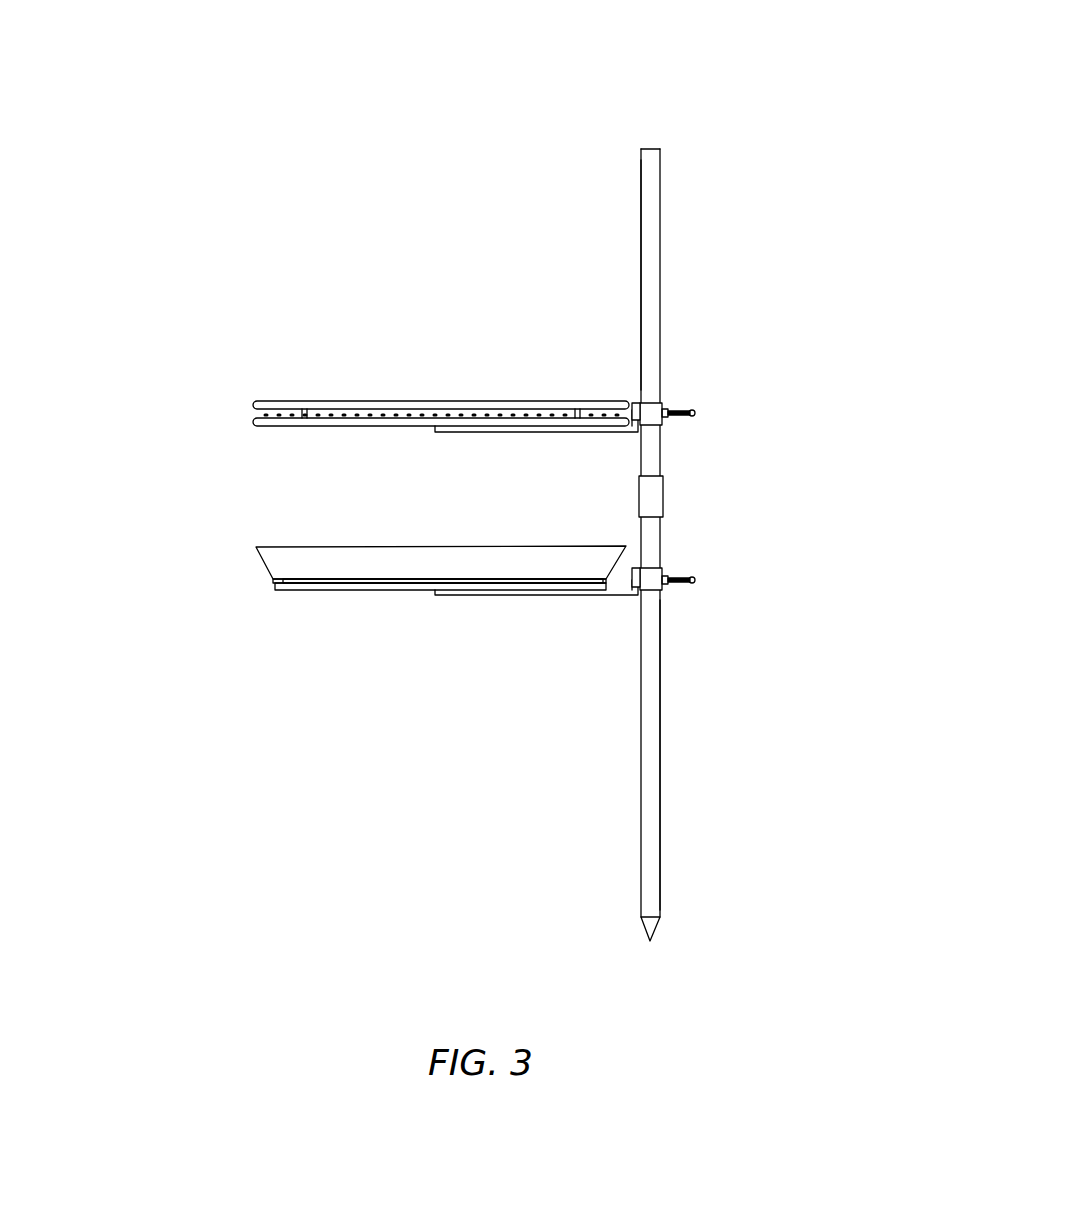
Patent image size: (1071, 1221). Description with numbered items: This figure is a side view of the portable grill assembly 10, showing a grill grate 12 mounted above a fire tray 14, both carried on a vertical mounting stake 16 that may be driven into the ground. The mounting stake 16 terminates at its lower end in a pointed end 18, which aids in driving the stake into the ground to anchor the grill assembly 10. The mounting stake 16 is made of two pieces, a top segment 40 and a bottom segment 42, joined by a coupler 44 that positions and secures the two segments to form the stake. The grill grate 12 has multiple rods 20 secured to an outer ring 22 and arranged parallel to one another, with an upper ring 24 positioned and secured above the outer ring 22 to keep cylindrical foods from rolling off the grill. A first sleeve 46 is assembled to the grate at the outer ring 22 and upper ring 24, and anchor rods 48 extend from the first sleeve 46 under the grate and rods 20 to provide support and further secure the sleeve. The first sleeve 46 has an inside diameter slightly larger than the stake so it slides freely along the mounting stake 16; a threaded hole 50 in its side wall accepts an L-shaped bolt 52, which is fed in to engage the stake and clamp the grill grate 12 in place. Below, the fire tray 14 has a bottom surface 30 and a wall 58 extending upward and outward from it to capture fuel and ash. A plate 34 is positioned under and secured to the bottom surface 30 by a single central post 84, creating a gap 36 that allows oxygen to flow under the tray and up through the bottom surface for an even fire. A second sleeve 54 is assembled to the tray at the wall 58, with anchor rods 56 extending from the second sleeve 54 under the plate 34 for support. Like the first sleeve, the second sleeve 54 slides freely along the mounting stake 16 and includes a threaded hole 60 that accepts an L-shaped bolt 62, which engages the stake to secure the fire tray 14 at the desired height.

The portable grill assembly 10 is at (722, 137).
The grill grate 12 is at (361, 335).
The fire tray 14 is at (367, 647).
The mounting stake 16 is at (648, 302).
The pointed end 18 is at (648, 917).
The rods 20 is at (448, 418).
The outer ring 22 is at (295, 422).
The upper ring 24 is at (392, 402).
The bottom surface 30 is at (375, 578).
The plate 34 is at (400, 583).
The gap 36 is at (252, 572).
The top segment 40 is at (648, 232).
The bottom segment 42 is at (650, 750).
The coupler 44 is at (650, 507).
The first sleeve 46 is at (655, 415).
The anchor rods 48 is at (500, 423).
The threaded hole 50 is at (665, 410).
The bolt 52 is at (690, 410).
The second sleeve 54 is at (655, 583).
The anchor rods 56 is at (532, 590).
The wall 58 is at (318, 555).
The threaded hole 60 is at (668, 573).
The bolt 62 is at (695, 580).
The post 84 is at (443, 579).